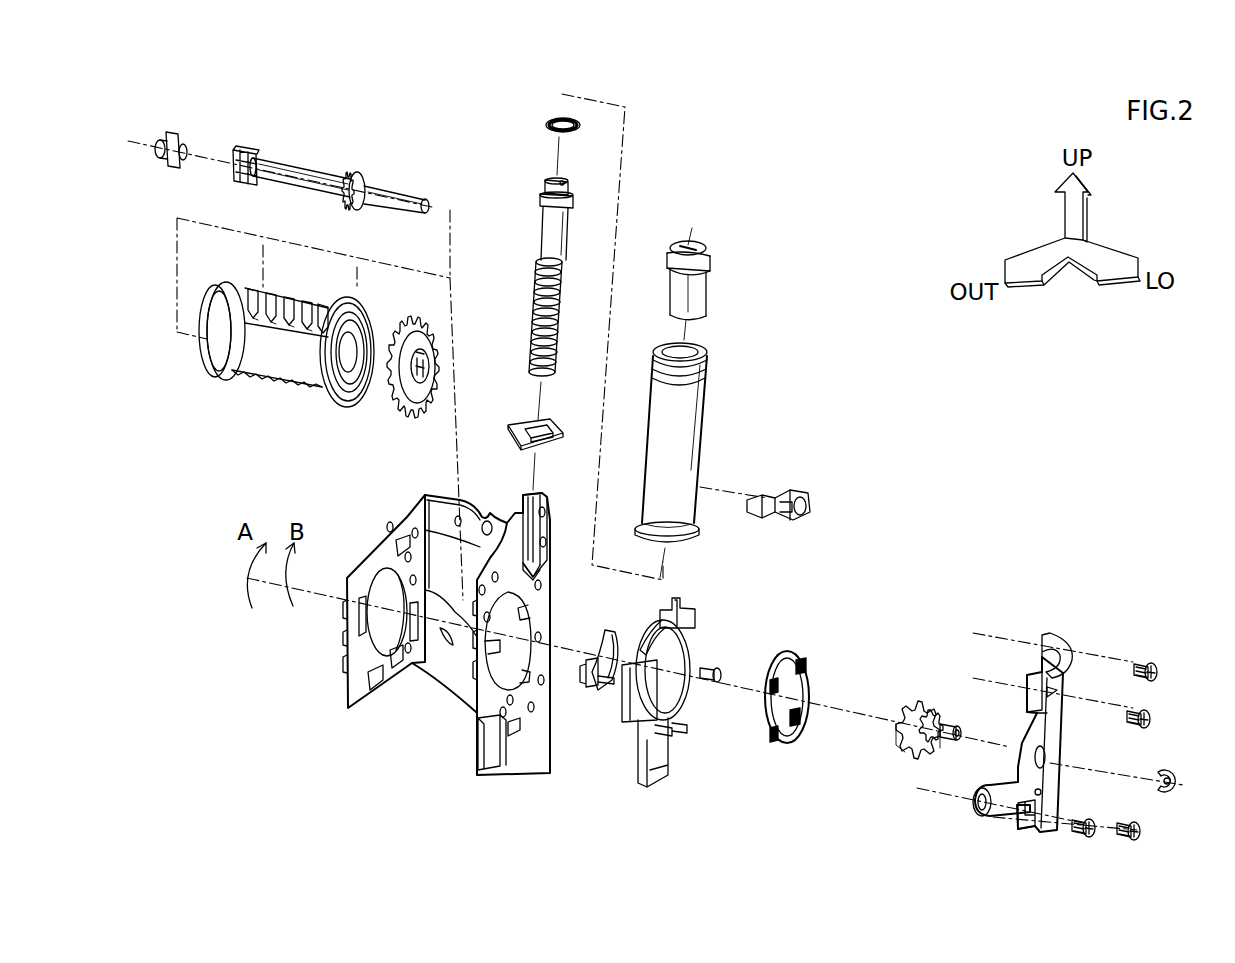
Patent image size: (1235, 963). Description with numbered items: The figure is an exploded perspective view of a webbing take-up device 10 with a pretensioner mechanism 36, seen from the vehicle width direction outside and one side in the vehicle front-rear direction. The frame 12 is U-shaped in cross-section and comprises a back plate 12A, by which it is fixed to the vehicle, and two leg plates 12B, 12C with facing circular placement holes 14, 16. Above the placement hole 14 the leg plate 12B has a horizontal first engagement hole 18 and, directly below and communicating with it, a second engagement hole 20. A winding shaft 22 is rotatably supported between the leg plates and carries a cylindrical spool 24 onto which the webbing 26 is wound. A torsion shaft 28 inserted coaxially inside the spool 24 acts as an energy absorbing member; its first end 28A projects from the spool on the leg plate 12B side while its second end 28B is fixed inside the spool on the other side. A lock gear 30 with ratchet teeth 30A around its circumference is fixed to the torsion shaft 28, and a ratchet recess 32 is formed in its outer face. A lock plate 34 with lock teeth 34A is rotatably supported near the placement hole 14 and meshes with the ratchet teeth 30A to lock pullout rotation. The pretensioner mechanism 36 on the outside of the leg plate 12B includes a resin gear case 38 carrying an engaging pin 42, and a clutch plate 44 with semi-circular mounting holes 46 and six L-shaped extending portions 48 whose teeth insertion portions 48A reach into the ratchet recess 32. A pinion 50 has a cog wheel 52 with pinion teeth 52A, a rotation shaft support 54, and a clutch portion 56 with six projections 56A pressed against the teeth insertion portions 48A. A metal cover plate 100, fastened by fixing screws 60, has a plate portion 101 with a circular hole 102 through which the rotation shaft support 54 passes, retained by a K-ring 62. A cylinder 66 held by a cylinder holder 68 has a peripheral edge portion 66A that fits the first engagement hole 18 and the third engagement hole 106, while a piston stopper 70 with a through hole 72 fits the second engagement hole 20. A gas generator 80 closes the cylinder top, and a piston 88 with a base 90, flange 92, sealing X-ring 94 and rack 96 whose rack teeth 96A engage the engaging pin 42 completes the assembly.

The webbing take-up device 10 is at (876, 242).
The frame 12 is at (397, 508).
The back plate 12A is at (452, 690).
The leg plate 12B is at (523, 745).
The leg plate 12C is at (380, 552).
The placement hole 14 is at (528, 626).
The placement hole 16 is at (368, 636).
The first engagement hole 18 is at (546, 542).
The second engagement hole 20 is at (542, 574).
The winding shaft 22 is at (316, 150).
The spool 24 is at (270, 380).
The webbing 26 is at (262, 267).
The torsion shaft 28 is at (334, 172).
The first end 28A is at (405, 188).
The second end 28B is at (247, 150).
The lock gear 30 is at (440, 332).
The ratchet teeth 30A is at (388, 403).
The ratchet recess 32 is at (432, 358).
The lock plate 34 is at (605, 630).
The lock teeth 34A is at (597, 692).
The pretensioner mechanism 36 is at (940, 499).
The gear case 38 is at (680, 688).
The engaging pin 42 is at (693, 630).
The clutch plate 44 is at (787, 645).
The mounting holes 46 is at (770, 740).
The extending portions 48 is at (802, 674).
The teeth insertion portions 48A is at (803, 723).
The pinion 50 is at (915, 670).
The cog wheel 52 is at (938, 707).
The pinion teeth 52A is at (937, 753).
The rotation shaft support 54 is at (953, 728).
The clutch portion 56 is at (903, 708).
The projections 56A is at (902, 750).
The fixing screws 60 is at (1157, 717).
The K-ring 62 is at (1172, 795).
The cylinder 66 is at (703, 401).
The peripheral edge portion 66A is at (703, 535).
The cylinder holder 68 is at (788, 493).
The piston stopper 70 is at (517, 425).
The through hole 72 is at (547, 426).
The gas generator 80 is at (707, 291).
The piston 88 is at (542, 175).
The base 90 is at (569, 183).
The flange 92 is at (540, 198).
The X-ring 94 is at (544, 125).
The rack 96 is at (542, 235).
The rack teeth 96A is at (542, 295).
The cover plate 100 is at (1063, 752).
The plate portion 101 is at (1050, 790).
The circular hole 102 is at (1048, 763).
The third engagement hole 106 is at (1068, 682).